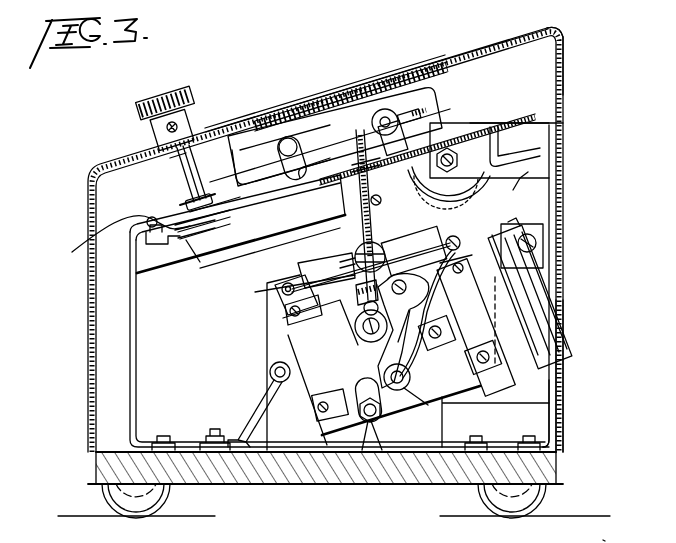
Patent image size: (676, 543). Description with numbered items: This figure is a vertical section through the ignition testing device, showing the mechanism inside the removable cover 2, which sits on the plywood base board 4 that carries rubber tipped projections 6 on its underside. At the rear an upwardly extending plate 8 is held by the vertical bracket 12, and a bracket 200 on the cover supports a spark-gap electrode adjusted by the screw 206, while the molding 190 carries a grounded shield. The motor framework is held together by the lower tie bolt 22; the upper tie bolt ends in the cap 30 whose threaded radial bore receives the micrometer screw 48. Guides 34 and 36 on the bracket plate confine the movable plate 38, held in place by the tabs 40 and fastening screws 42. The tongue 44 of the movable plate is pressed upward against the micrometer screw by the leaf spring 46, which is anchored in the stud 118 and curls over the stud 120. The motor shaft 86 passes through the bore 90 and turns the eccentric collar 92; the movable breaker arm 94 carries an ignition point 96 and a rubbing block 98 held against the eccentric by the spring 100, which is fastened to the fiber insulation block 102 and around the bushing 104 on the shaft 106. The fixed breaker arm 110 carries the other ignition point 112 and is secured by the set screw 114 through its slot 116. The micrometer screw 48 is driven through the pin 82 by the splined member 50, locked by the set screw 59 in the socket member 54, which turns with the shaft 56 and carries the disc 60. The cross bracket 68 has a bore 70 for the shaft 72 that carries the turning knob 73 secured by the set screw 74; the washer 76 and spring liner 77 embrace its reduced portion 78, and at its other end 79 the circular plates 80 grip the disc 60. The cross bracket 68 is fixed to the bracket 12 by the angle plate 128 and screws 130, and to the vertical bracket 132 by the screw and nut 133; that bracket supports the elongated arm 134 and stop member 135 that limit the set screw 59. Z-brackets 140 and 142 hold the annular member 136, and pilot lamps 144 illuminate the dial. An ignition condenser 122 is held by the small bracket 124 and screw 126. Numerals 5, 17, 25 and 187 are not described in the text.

The removable cover 2 is at (565, 110).
The base board 4 is at (90, 465).
The section line 5 is at (236, 218).
The rubber tipped projections 6 is at (133, 503).
The upwardly extending plate 8 is at (549, 402).
The vertical bracket 12 is at (566, 352).
The element 17 is at (614, 536).
The lower tie bolt 22 is at (370, 424).
The plate 25 is at (241, 236).
The cap 30 is at (413, 250).
The guide 34 is at (264, 347).
The guide 36 is at (530, 297).
The movable plate 38 is at (259, 404).
The tabs 40 is at (290, 313).
The fastening screws 42 is at (292, 337).
The tongue 44 is at (371, 267).
The leaf spring 46 is at (312, 272).
The micrometer screw 48 is at (377, 215).
The splined member 50 is at (356, 256).
The socket member 54 is at (378, 132).
The shaft 56 is at (352, 95).
The set screw 59 is at (445, 188).
The disc 60 is at (471, 126).
The cross bracket 68 is at (290, 171).
The bore 70 is at (175, 210).
The shaft 72 is at (173, 160).
The turning knob 73 is at (147, 107).
The set screw 74 is at (155, 132).
The washer 76 is at (200, 187).
The spring liner 77 is at (194, 170).
The reduced portion 78 is at (186, 198).
The other end 79 is at (193, 232).
The circular plates 80 is at (161, 246).
The pin 82 is at (382, 201).
The motor shaft 86 is at (288, 387).
The bore 90 is at (364, 306).
The eccentric collar 92 is at (355, 331).
The movable breaker arm 94 is at (411, 384).
The ignition point 96 is at (403, 331).
The rubbing block 98 is at (408, 326).
The spring 100 is at (418, 362).
The fiber insulation block 102 is at (455, 332).
The bushing 104 is at (388, 435).
The shaft 106 is at (495, 422).
The fixed breaker arm 110 is at (476, 328).
The ignition point 112 is at (358, 290).
The set screw 114 is at (460, 274).
The slot 116 is at (437, 256).
The stud 118 is at (513, 190).
The stud 120 is at (281, 288).
The ignition condenser 122 is at (540, 317).
The small bracket 124 is at (528, 258).
The screw 126 is at (540, 240).
The angle plate 128 is at (503, 156).
The screws 130 is at (500, 138).
The vertical bracket 132 is at (133, 377).
The screw and nut 133 is at (115, 241).
The elongated arm 134 is at (202, 262).
The stop member 135 is at (337, 203).
The annular member 136 is at (243, 137).
The Z-bracket 140 is at (285, 143).
The Z-bracket 142 is at (452, 110).
The pilot lamps 144 is at (288, 137).
The cover 187 is at (452, 80).
The molding 190 is at (411, 124).
The bracket 200 is at (563, 92).
The screw 206 is at (463, 164).